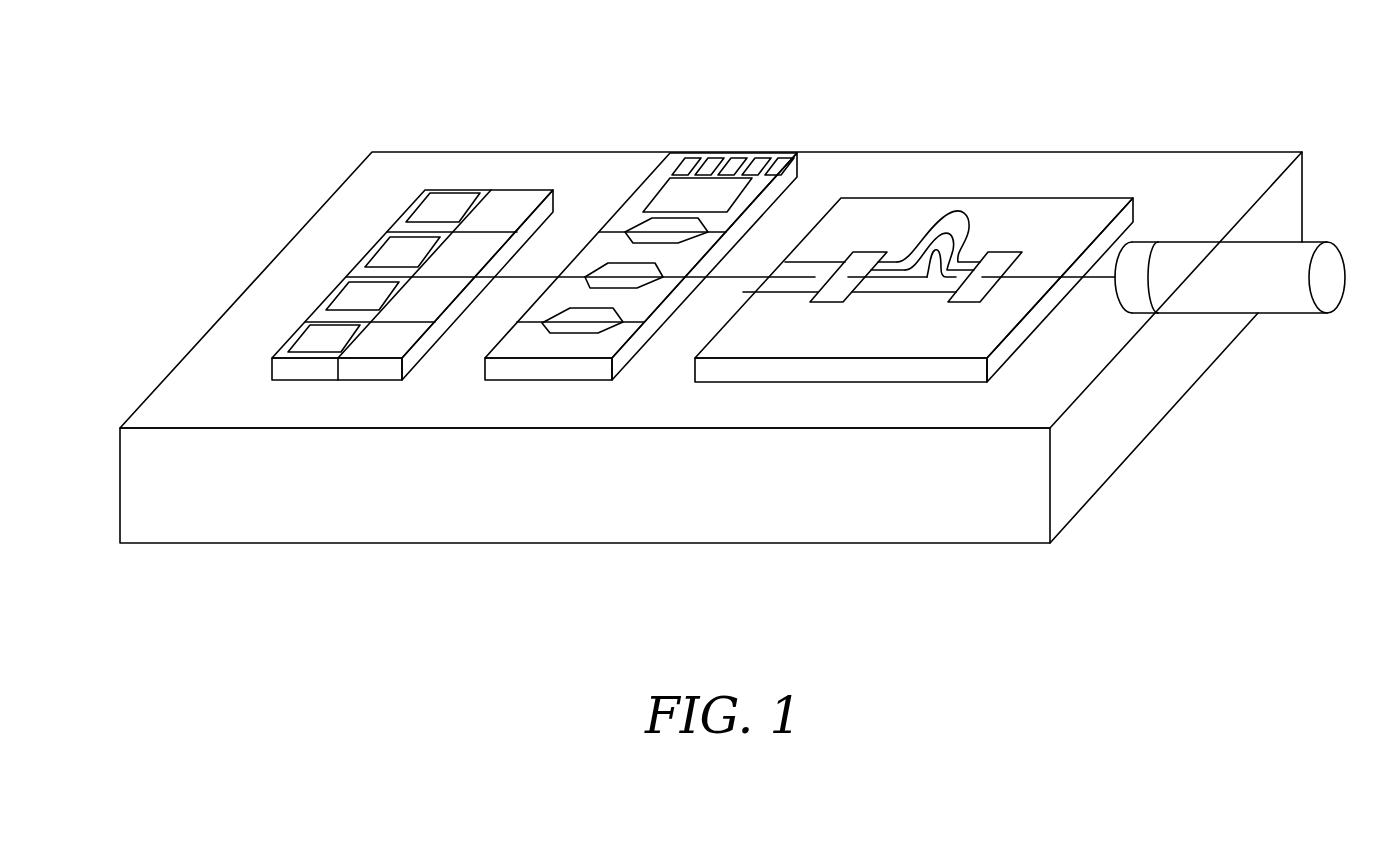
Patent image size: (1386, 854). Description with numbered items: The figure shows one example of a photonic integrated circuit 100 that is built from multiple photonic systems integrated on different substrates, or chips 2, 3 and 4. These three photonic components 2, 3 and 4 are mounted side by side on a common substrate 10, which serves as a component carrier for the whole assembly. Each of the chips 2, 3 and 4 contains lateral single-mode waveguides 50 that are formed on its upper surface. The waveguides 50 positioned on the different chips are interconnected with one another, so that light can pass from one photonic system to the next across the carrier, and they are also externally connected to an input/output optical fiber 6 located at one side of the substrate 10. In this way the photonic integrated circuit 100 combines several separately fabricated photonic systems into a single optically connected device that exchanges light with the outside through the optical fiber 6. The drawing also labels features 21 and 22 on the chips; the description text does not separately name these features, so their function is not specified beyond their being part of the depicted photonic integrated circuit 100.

The photonic integrated circuit 100 is at (296, 106).
The substrate 10 is at (736, 498).
The chip 2 is at (370, 369).
The chip 3 is at (570, 369).
The chip 4 is at (890, 369).
The connector pads 21 is at (797, 172).
The transmission line 22 is at (1097, 277).
The lateral single-mode waveguide 50 is at (497, 232).
The input/output optical fiber 6 is at (1285, 305).